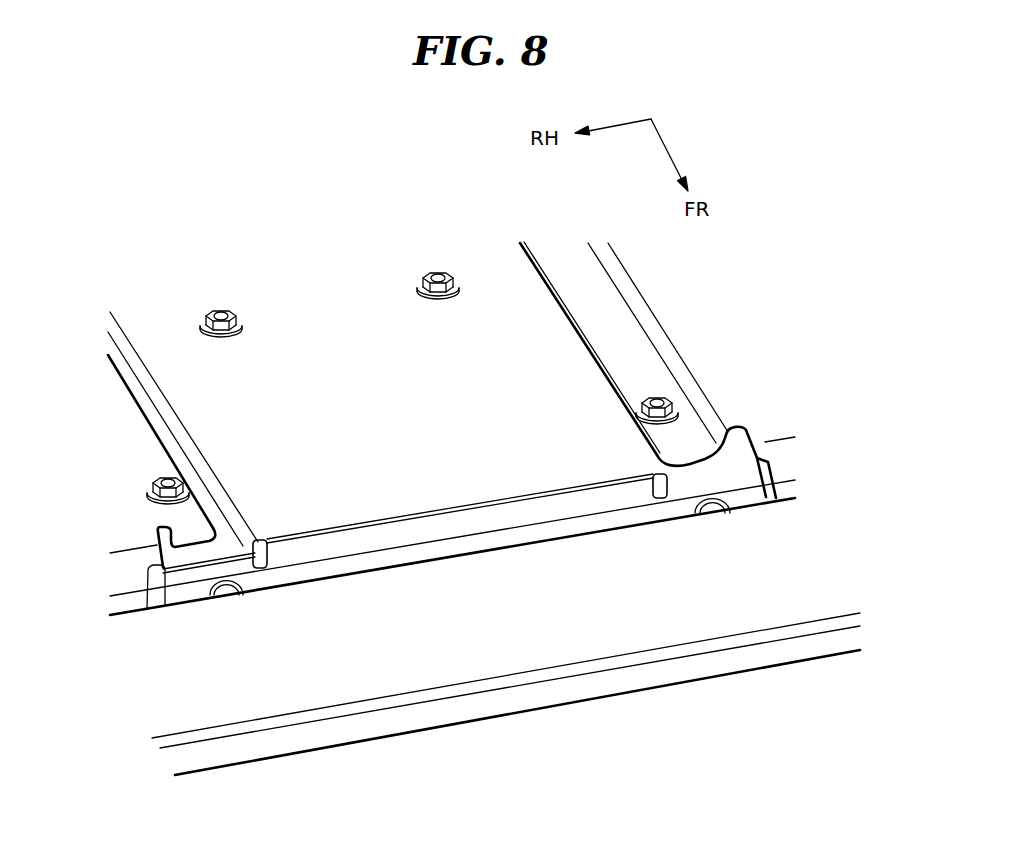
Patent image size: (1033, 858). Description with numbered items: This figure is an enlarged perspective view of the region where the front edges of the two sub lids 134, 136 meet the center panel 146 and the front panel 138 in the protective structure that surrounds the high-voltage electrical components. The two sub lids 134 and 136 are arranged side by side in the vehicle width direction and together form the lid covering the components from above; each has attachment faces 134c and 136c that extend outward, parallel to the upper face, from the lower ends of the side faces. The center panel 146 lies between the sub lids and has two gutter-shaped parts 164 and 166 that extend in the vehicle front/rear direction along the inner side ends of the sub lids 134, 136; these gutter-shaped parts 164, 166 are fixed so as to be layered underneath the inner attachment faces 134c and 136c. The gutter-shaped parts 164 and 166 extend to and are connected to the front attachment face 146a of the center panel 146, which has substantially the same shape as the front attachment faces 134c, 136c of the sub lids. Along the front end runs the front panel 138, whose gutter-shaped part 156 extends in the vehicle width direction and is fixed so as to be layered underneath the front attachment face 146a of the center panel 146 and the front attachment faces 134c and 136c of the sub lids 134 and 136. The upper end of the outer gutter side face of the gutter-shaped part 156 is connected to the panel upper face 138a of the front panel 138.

The sub lid 134 is at (131, 531).
The attachment face 134c is at (130, 427).
The sub lid 136 is at (736, 418).
The attachment face 136c is at (623, 333).
The front panel 138 is at (313, 752).
The panel upper face 138a is at (150, 708).
The center panel 146 is at (495, 269).
The attachment face 146a is at (540, 530).
The gutter-shaped part 156 is at (158, 606).
The gutter-shaped part 164 is at (198, 563).
The gutter-shaped part 166 is at (702, 472).